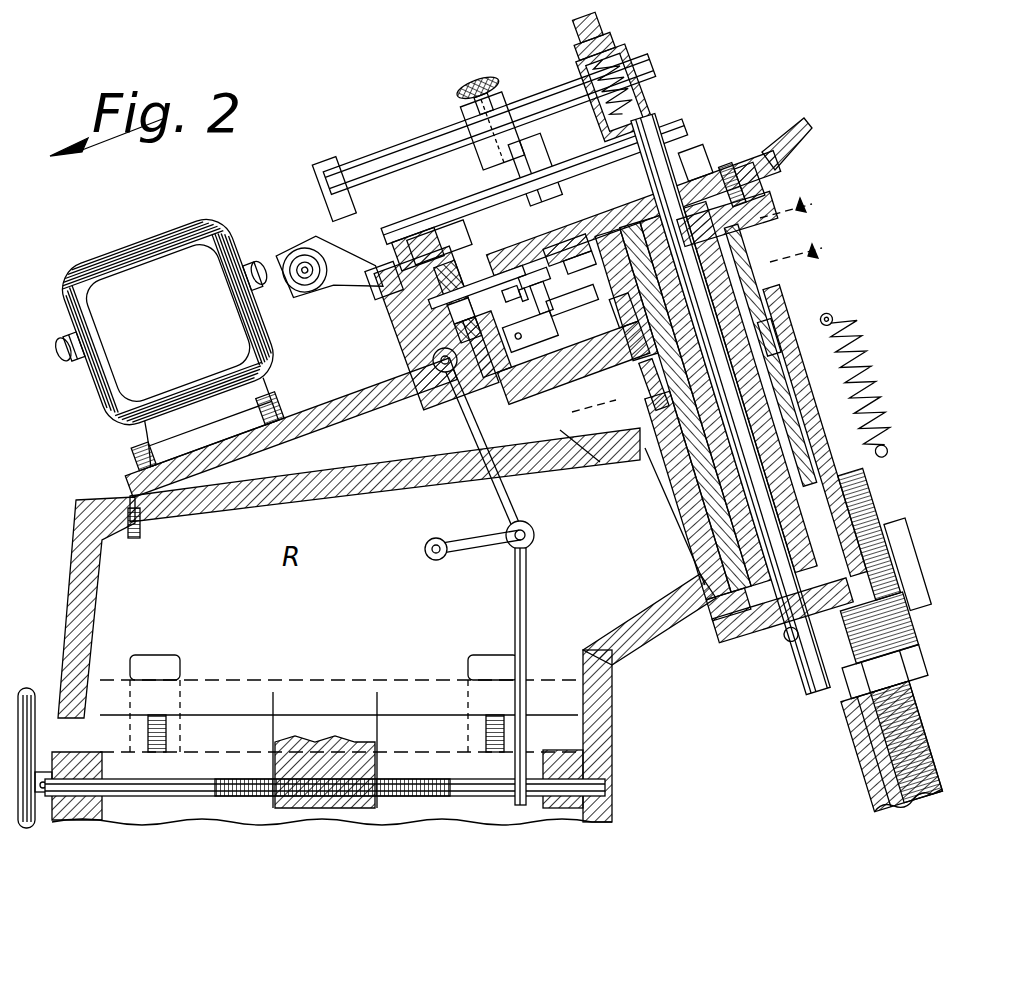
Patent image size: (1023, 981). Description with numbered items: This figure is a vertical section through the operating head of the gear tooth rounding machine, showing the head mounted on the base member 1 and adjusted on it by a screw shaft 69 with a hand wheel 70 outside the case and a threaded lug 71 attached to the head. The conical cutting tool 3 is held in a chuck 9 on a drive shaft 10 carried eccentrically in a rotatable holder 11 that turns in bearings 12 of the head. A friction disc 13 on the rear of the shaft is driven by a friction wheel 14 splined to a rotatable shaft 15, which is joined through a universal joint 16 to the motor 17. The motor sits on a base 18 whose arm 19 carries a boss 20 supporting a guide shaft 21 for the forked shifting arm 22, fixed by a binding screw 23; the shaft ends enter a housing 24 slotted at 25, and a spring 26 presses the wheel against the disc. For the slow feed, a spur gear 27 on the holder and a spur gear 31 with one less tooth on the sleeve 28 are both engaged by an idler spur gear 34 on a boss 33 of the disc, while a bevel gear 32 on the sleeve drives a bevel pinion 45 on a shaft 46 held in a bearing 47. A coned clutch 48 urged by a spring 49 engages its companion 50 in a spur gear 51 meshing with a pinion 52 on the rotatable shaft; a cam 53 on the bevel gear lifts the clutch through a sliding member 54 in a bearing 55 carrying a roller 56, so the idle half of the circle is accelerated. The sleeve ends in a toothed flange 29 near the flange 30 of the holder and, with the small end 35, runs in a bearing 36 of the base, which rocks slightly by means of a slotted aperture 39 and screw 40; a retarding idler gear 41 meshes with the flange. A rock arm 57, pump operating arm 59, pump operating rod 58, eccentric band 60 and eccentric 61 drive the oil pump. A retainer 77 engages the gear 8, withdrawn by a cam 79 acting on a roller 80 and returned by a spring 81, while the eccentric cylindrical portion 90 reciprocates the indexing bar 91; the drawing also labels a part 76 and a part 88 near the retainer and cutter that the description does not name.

The base member 1 is at (612, 812).
The cutting tool 3 is at (830, 682).
The gear 8 is at (690, 545).
The chuck 9 is at (772, 638).
The drive shaft 10 is at (697, 357).
The rotatable holder 11 is at (668, 525).
The bearings 12 is at (700, 606).
The friction disc 13 is at (800, 120).
The friction wheel 14 is at (530, 156).
The rotatable shaft 15 is at (470, 202).
The universal joint 16 is at (295, 252).
The motor 17 is at (173, 344).
The motor base 18 is at (318, 408).
The arm 19 is at (375, 300).
The boss 20 is at (340, 165).
The guide shaft 21 is at (440, 136).
The shifting arm 22 is at (497, 115).
The binding screw 23 is at (470, 82).
The housing 24 is at (632, 104).
The slot 25 is at (705, 156).
The spring 26 is at (642, 122).
The spur gear 27 is at (700, 172).
The sleeve 28 is at (715, 266).
The toothed flange 29 is at (842, 338).
The flange 30 is at (612, 420).
The spur gear 31 is at (600, 262).
The bevel gear 32 is at (582, 280).
The boss 33 is at (740, 186).
The idler spur gear 34 is at (748, 206).
The small end of holder 35 is at (725, 292).
The bearing 36 is at (760, 296).
The slotted aperture 39 is at (125, 472).
The screw 40 is at (135, 527).
The idler gear 41 is at (590, 465).
The bevel pinion 45 is at (548, 276).
The shaft 46 is at (485, 290).
The bearing 47 is at (514, 322).
The coned clutch 48 is at (445, 272).
The spring 49 is at (500, 292).
The clutch companion 50 is at (430, 286).
The spur gear 51 is at (428, 270).
The pinion 52 is at (415, 206).
The cam 53 is at (580, 356).
The sliding member 54 is at (605, 342).
The bearing 55 is at (530, 335).
The roller 56 is at (600, 362).
The rock arm 57 is at (466, 542).
The pump operating rod 58 is at (530, 588).
The pump operating arm 59 is at (510, 496).
The eccentric band 60 is at (432, 301).
The eccentric 61 is at (428, 328).
The screw shaft 69 is at (325, 783).
The hand wheel 70 is at (28, 690).
The threaded lug 71 is at (398, 748).
The rack 76 is at (870, 492).
The retainer 77 is at (885, 646).
The cam 79 is at (808, 326).
The roller 80 is at (790, 320).
The spring 81 is at (860, 396).
The nut 88 is at (912, 682).
The cylindrical portion 90 is at (760, 612).
The reciprocably mounted bar 91 is at (905, 562).